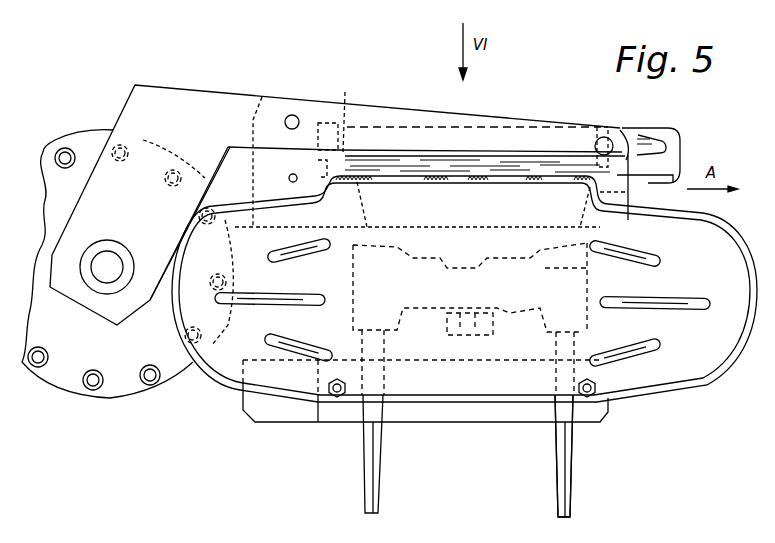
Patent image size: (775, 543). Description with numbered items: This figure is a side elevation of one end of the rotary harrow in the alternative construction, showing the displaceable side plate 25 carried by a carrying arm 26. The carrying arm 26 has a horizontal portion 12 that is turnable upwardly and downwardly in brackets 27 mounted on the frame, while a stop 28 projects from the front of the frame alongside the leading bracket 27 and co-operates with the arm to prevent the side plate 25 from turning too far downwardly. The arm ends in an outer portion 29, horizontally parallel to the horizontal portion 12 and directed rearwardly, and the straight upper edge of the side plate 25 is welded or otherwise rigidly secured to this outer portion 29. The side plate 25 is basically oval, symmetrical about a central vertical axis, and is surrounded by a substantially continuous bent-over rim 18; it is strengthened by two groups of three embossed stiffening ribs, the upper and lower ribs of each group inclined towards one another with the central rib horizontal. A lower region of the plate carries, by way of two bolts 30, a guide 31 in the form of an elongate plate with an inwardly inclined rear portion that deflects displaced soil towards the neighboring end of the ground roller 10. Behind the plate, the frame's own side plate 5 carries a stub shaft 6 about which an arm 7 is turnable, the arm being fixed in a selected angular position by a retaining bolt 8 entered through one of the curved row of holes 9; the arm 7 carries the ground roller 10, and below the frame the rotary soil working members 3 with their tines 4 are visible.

The rotary soil working member 3 is at (554, 454).
The tines 4 is at (377, 497).
The side plate 5 is at (257, 169).
The stub shaft 6 is at (613, 140).
The arm 7 is at (173, 103).
The retaining bolt 8 is at (296, 115).
The holes 9 is at (289, 180).
The ground roller 10 is at (67, 365).
The horizontal portion 12 is at (512, 134).
The rim 18 is at (720, 378).
The side plate 25 is at (478, 368).
The carrying arm 26 is at (687, 132).
The bracket 27 is at (355, 97).
The stop 28 is at (652, 176).
The outer portion 29 is at (543, 157).
The bolts 30 is at (345, 389).
The guide 31 is at (347, 413).